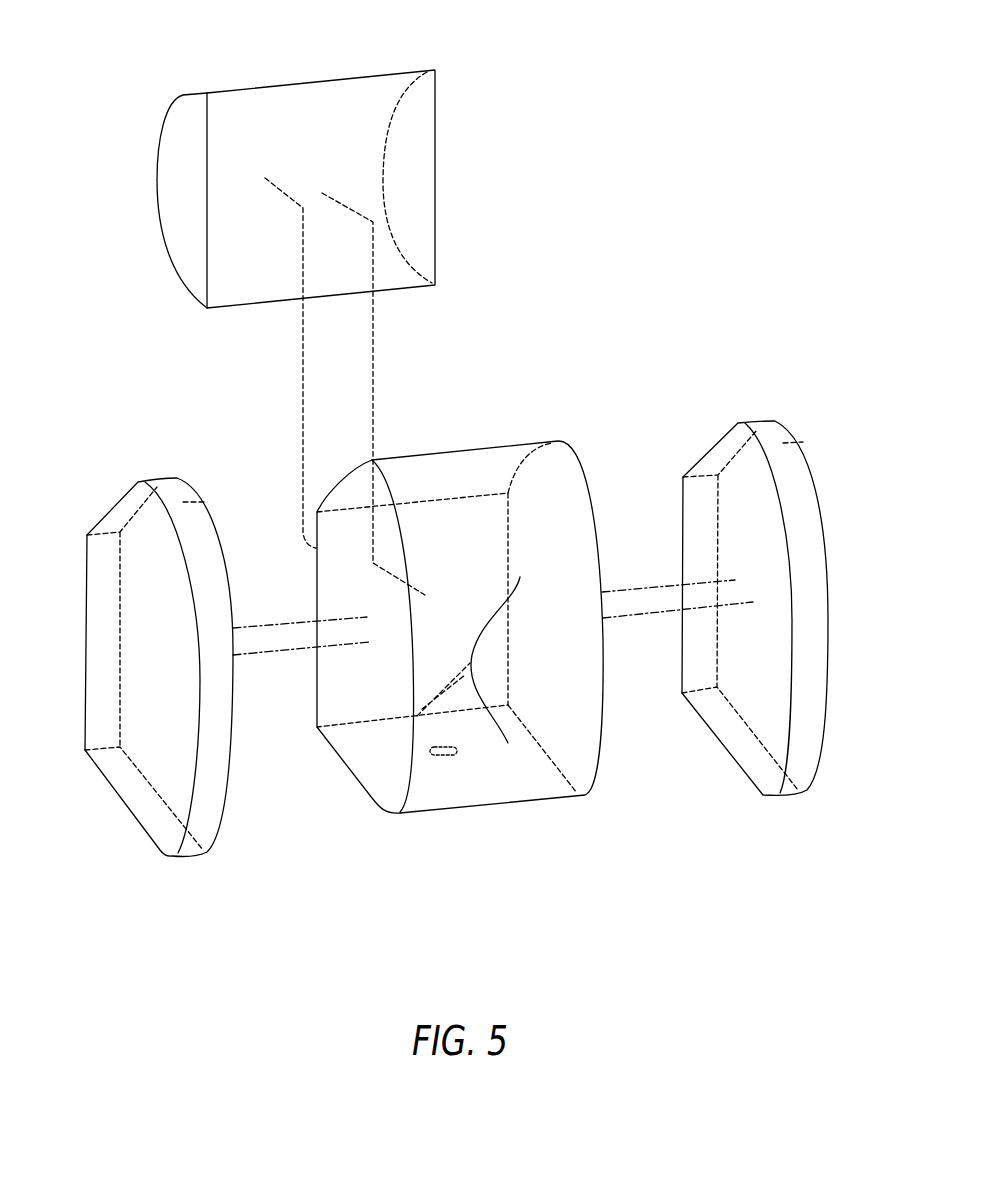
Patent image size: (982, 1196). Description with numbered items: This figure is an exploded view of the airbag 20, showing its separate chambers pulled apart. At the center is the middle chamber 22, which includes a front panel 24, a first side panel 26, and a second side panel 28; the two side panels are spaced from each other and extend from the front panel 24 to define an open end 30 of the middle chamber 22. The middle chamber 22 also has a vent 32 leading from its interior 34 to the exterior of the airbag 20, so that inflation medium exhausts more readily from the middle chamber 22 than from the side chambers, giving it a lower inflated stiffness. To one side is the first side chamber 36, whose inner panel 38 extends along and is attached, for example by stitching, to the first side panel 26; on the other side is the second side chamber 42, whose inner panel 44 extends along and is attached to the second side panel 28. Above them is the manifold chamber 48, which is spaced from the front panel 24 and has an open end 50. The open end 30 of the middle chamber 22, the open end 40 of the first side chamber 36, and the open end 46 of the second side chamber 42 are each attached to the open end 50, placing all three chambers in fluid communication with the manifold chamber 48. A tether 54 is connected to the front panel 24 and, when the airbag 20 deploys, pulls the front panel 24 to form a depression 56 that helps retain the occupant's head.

The airbag 20 is at (669, 77).
The middle chamber 22 is at (448, 615).
The front panel 24 is at (523, 515).
The first side panel 26 is at (343, 572).
The second side panel 28 is at (548, 540).
The open end 30 is at (446, 531).
The vent 32 is at (447, 762).
The interior 34 is at (358, 678).
The first side chamber 36 is at (157, 641).
The inner panel 38 is at (210, 587).
The open end 40 is at (111, 580).
The second side chamber 42 is at (737, 587).
The inner panel 44 is at (767, 545).
The open end 46 is at (698, 505).
The manifold chamber 48 is at (296, 306).
The open end 50 is at (329, 117).
The tether 54 is at (443, 678).
The depression 56 is at (480, 649).